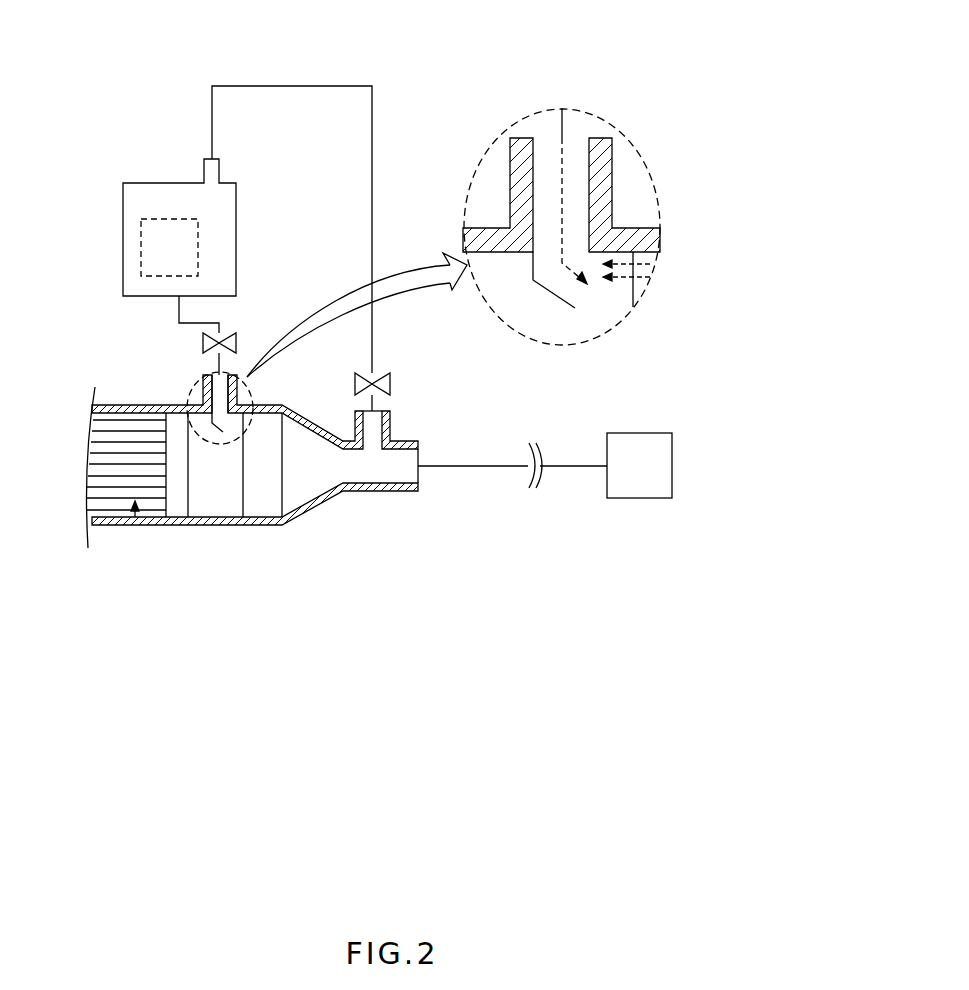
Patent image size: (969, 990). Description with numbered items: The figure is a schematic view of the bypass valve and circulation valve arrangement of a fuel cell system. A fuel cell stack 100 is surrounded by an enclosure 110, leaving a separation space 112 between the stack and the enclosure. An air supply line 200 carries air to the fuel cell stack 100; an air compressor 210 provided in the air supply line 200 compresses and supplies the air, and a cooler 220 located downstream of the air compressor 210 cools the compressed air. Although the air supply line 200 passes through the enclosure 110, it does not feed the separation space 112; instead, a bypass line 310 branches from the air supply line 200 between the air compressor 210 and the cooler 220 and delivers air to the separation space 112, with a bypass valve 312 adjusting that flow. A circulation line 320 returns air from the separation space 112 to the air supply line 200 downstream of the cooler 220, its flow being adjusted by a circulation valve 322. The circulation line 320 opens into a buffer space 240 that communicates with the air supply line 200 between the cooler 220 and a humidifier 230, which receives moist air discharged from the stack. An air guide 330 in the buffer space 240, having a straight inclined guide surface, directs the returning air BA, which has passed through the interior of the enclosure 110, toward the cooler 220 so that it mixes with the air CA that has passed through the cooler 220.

The fuel cell stack 100 is at (141, 247).
The enclosure 110 is at (163, 183).
The separation space 112 is at (220, 254).
The air supply line 200 is at (475, 467).
The air compressor 210 is at (673, 465).
The cooler 220 is at (243, 488).
The humidifier 230 is at (135, 525).
The buffer space 240 is at (212, 480).
The bypass line 310 is at (290, 85).
The bypass valve 312 is at (390, 383).
The circulation line 320 is at (179, 308).
The circulation valve 322 is at (205, 342).
The air guide 330 is at (553, 295).
The air supplied through the circulation line BA is at (562, 175).
The air having passed through the cooler CA is at (630, 253).